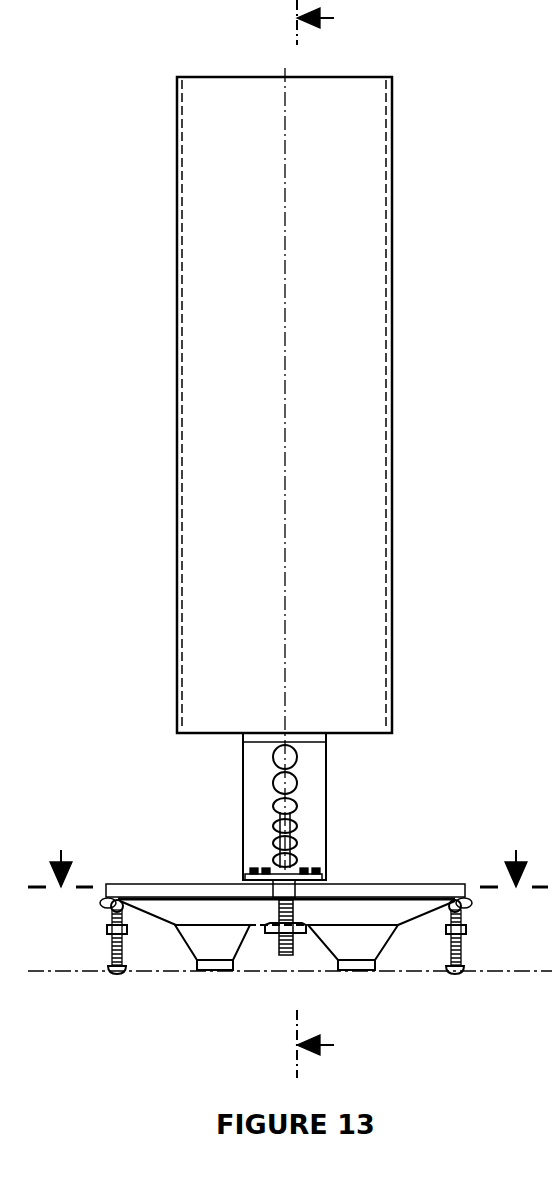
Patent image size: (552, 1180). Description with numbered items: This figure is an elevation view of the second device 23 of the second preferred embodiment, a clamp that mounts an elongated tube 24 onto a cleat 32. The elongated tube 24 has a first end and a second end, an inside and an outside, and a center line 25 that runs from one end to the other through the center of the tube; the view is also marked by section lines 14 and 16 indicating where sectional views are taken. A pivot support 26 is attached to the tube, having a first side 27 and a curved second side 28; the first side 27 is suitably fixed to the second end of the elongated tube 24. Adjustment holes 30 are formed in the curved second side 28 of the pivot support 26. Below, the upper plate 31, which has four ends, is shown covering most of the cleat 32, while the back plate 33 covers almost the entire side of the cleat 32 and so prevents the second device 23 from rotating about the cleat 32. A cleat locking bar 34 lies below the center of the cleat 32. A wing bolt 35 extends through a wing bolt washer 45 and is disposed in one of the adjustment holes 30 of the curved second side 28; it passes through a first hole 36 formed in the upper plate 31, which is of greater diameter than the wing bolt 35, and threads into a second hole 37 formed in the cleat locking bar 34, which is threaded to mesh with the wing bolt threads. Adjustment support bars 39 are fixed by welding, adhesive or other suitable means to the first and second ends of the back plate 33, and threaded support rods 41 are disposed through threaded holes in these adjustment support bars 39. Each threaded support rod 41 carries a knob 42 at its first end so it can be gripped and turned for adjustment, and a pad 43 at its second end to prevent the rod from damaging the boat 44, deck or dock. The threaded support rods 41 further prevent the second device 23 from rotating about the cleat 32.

The section line 14 is at (330, 539).
The section line 16 is at (288, 856).
The second device 23 is at (392, 266).
The elongated tube 24 is at (392, 372).
The center line 25 is at (285, 192).
The pivot support 26 is at (326, 823).
The first side 27 is at (326, 741).
The curved second side 28 is at (326, 791).
The adjustment holes 30 is at (268, 870).
The upper plate 31 is at (178, 884).
The cleat 32 is at (188, 945).
The back plate 33 is at (425, 927).
The cleat locking bar 34 is at (262, 930).
The wing bolt 35 is at (297, 850).
The first hole 36 is at (298, 892).
The second hole 37 is at (305, 928).
The adjustment support bars 39 is at (128, 934).
The threaded support rods 41 is at (111, 934).
The knobs 42 is at (108, 903).
The pads 43 is at (113, 972).
The boat 44 is at (395, 975).
The wing bolt washer 45 is at (257, 874).